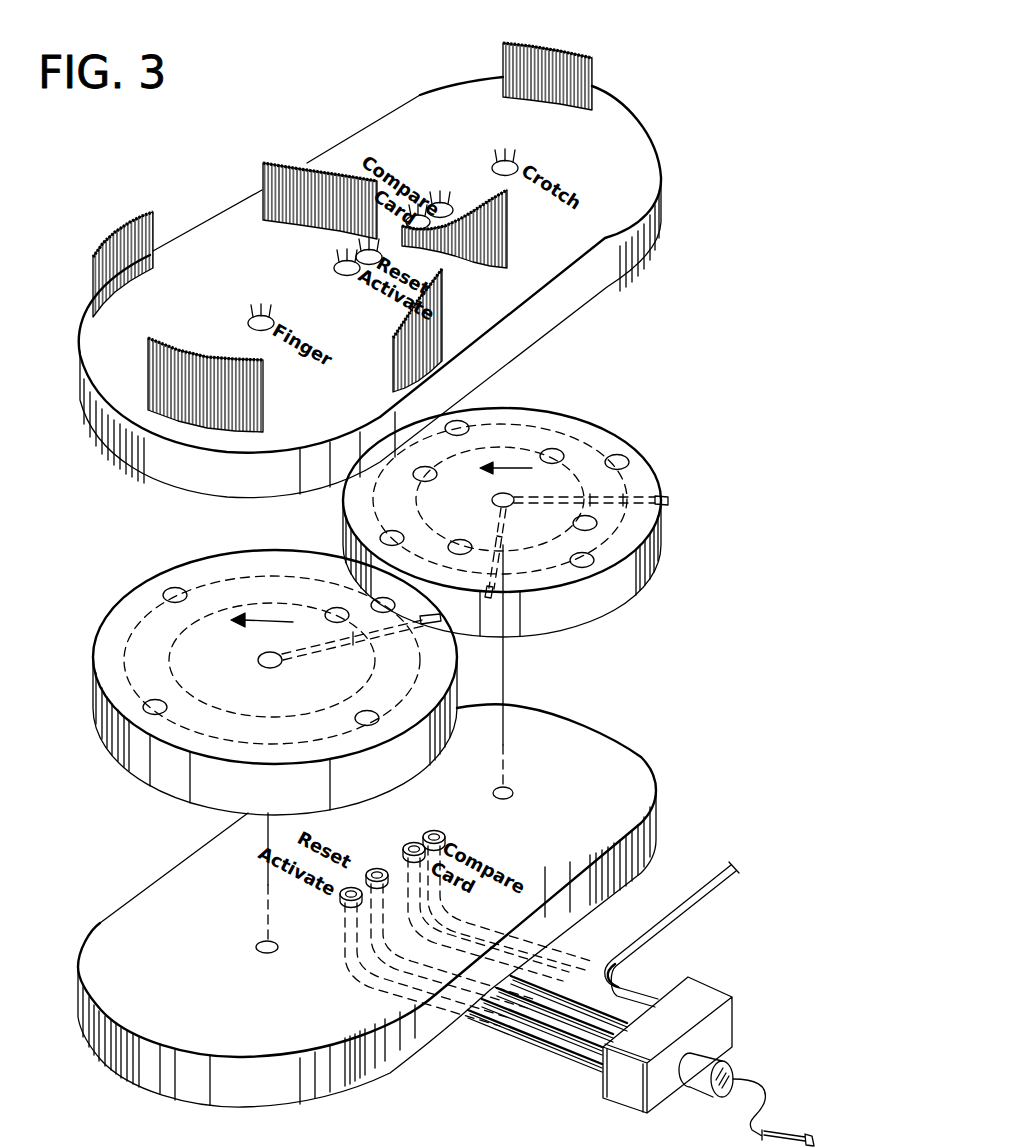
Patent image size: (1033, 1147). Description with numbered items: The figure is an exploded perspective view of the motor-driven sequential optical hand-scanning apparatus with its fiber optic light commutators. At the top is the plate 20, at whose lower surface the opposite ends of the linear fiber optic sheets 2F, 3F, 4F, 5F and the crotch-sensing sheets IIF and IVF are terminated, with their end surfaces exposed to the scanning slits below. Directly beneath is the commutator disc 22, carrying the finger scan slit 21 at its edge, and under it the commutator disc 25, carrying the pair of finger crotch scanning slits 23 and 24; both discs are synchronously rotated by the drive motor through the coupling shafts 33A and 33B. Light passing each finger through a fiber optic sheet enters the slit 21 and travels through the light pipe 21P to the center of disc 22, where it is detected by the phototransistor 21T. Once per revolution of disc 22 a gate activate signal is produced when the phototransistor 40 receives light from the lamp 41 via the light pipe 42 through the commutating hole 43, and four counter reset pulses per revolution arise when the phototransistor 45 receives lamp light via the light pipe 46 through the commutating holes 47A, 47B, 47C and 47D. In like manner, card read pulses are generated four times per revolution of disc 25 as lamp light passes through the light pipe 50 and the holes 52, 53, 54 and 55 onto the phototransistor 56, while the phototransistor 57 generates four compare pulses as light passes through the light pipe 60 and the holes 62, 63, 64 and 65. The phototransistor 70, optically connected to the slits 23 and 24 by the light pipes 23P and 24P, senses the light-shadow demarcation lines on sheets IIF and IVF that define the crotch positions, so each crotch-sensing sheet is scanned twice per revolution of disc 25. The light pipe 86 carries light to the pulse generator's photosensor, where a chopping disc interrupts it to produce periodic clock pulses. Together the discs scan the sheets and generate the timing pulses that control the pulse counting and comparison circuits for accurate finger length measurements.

The plate 20 is at (607, 133).
The fiber optic sheet 2F is at (175, 355).
The fiber optic sheet 3F is at (133, 247).
The fiber optic sheet 4F is at (300, 165).
The fiber optic sheet 5F is at (395, 345).
The crotch-sensing fiber optic sheet IIF is at (558, 50).
The crotch-sensing fiber optic sheet IVF is at (487, 237).
The phototransistor 21T is at (260, 308).
The phototransistor 40 is at (352, 275).
The phototransistor 45 is at (360, 244).
The phototransistor 56 is at (428, 202).
The phototransistor 57 is at (440, 203).
The phototransistor 70 is at (513, 148).
The commutator disc 25 is at (555, 420).
The hole 54 is at (465, 428).
The hole 64 is at (556, 458).
The hole 55 is at (620, 462).
The hole 63 is at (432, 478).
The hole 53 is at (397, 535).
The hole 62 is at (462, 543).
The hole 65 is at (593, 523).
The hole 52 is at (590, 563).
The finger crotch scanning slit 24 is at (665, 500).
The light pipe 24P is at (583, 500).
The finger crotch scanning slit 23 is at (498, 590).
The light pipe 23P is at (510, 518).
The commutator disc 22 is at (110, 657).
The commutating hole 47A is at (382, 604).
The commutating hole 47B is at (365, 718).
The commutating hole 47C is at (157, 705).
The commutating hole 47D is at (175, 592).
The commutating hole 43 is at (337, 617).
The finger scan slit 21 is at (440, 640).
The light pipe 21P is at (353, 638).
The coupling shaft 33A is at (268, 882).
The coupling shaft 33B is at (505, 693).
The light pipe 42 is at (553, 1048).
The light pipe 46 is at (523, 1015).
The light pipe 50 is at (540, 993).
The light pipe 60 is at (603, 975).
The light pipe 86 is at (690, 905).
The lamp 41 is at (717, 1060).